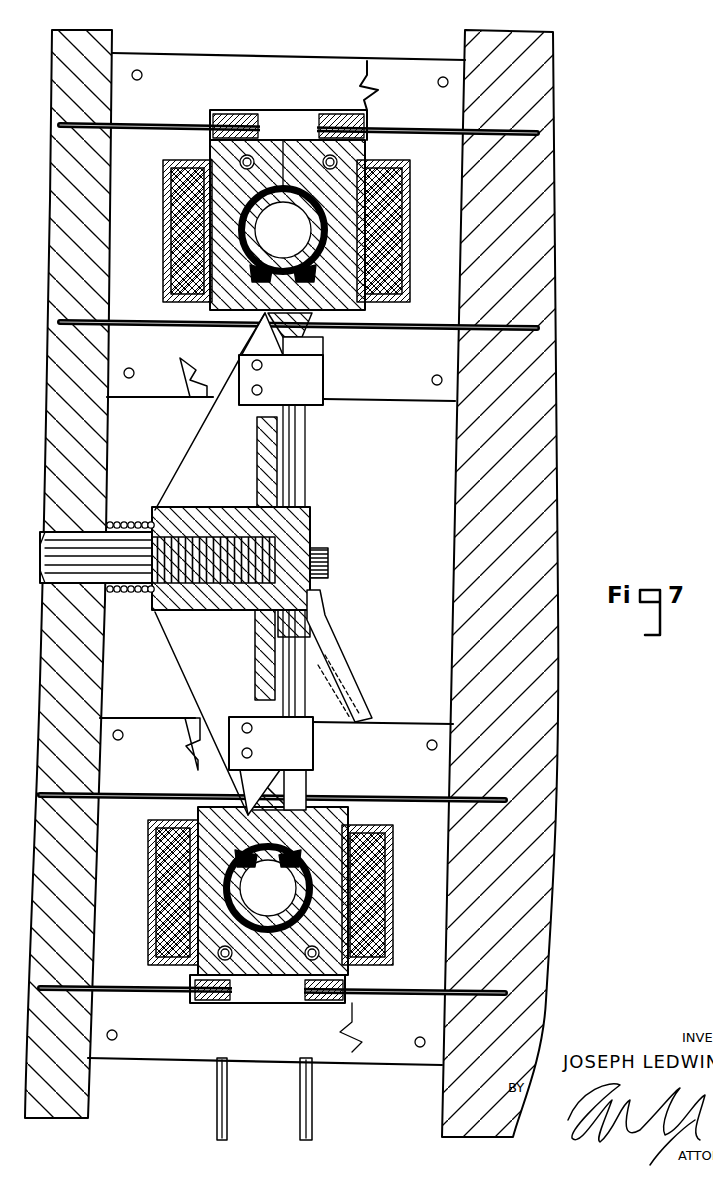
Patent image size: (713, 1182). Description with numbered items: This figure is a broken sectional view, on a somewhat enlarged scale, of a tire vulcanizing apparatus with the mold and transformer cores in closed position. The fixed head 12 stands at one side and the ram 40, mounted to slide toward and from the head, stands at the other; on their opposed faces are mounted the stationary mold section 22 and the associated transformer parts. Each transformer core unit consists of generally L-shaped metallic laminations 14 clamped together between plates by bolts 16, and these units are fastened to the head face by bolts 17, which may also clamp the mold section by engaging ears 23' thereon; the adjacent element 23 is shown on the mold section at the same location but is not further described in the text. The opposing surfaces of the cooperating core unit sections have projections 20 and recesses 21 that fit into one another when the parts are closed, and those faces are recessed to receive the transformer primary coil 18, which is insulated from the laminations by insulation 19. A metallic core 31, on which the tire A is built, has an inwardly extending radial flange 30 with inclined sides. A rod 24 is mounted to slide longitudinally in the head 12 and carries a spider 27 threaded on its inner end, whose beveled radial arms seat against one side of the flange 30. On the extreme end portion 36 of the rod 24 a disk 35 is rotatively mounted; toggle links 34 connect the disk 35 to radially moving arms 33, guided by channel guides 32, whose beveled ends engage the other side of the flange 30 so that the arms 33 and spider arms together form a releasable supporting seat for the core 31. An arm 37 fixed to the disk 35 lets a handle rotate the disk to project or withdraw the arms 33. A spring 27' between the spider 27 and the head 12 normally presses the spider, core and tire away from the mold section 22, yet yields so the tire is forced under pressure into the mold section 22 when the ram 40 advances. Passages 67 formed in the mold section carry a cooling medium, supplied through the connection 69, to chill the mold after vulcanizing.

The fixed head 12 is at (70, 433).
The metallic laminations 14 is at (132, 155).
The bolts 16 is at (137, 69).
The bolts 17 is at (180, 120).
The transformer primary coil 18 is at (190, 190).
The insulation 19 is at (172, 232).
The projections 20 is at (365, 80).
The recesses 21 is at (190, 397).
The mold section 22 is at (250, 256).
The contact 23 is at (288, 1066).
The ears 23' is at (302, 1066).
The rod 24 is at (128, 555).
The spider 27 is at (258, 564).
The spring 27' is at (130, 526).
The radial flange 30 is at (197, 810).
The metallic core 31 is at (196, 1003).
The channel guides 32 is at (298, 380).
The radially moving arms 33 is at (300, 337).
The toggle links 34 is at (297, 480).
The disk 35 is at (292, 522).
The extreme end portion of the rod 36 is at (318, 563).
The arm 37 is at (330, 655).
The ram 40 is at (480, 533).
The supply connection 69 is at (217, 1132).
The passages 67 is at (345, 978).
The tire A is at (303, 923).